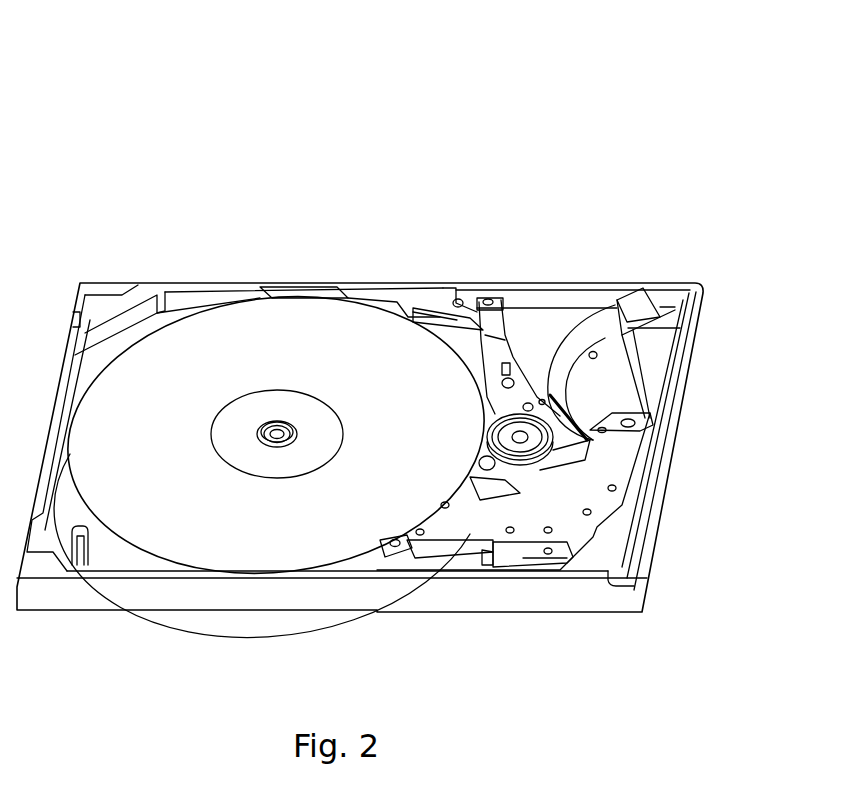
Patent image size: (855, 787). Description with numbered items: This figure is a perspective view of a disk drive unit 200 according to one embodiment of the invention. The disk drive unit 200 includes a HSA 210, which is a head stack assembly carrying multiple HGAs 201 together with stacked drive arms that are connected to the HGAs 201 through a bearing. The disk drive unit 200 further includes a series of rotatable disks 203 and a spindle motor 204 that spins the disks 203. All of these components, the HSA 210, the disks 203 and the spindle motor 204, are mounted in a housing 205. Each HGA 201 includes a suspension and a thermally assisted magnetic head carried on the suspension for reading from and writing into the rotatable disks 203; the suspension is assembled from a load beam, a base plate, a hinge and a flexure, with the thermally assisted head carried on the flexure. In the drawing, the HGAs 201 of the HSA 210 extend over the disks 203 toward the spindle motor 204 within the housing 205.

The disk drive unit 200 is at (71, 37).
The HGA 201 is at (506, 321).
The rotatable disks 203 is at (198, 349).
The spindle motor 204 is at (296, 418).
The housing 205 is at (443, 600).
The HSA 210 is at (562, 408).